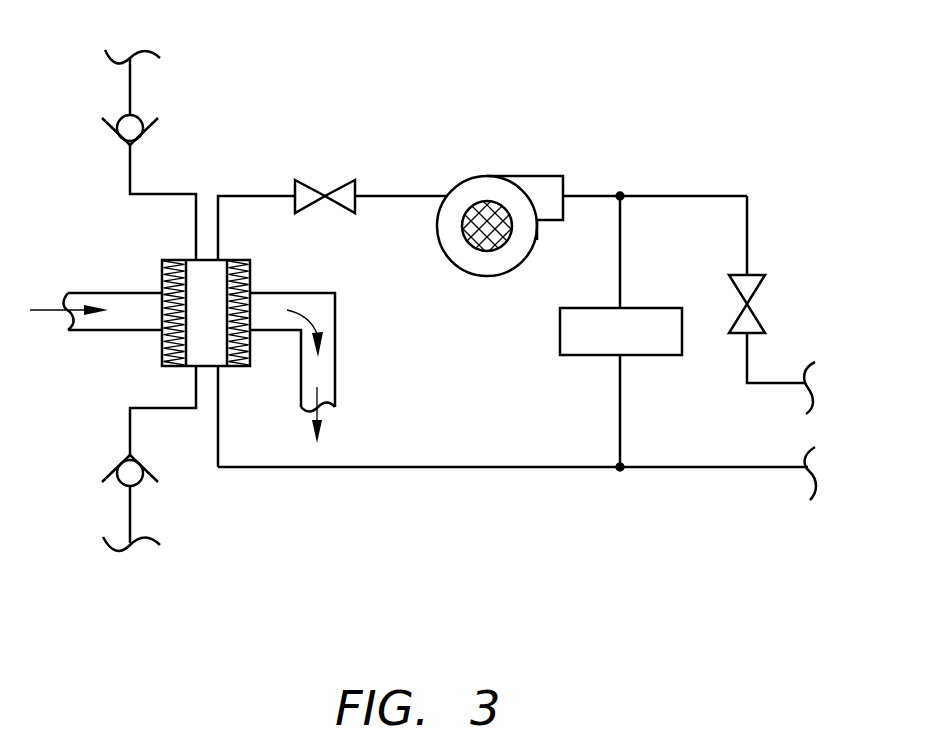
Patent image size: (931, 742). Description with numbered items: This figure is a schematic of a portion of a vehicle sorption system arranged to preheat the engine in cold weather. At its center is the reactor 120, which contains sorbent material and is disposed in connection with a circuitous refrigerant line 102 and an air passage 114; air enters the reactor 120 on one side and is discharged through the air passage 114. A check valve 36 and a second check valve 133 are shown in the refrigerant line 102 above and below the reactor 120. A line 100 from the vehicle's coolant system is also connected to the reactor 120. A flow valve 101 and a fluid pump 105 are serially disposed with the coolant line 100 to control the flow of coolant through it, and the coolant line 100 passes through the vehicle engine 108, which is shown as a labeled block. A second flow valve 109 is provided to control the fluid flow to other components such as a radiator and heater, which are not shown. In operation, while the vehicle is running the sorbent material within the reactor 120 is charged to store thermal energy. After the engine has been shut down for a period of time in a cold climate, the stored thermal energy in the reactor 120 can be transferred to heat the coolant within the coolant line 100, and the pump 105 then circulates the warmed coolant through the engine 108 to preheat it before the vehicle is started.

The check valve 36 is at (137, 117).
The circuitous refrigerant line 102 is at (195, 239).
The reactor 120 is at (162, 355).
The check valve 133 is at (124, 478).
The air passage 114 is at (308, 368).
The flow valve 101 is at (305, 182).
The fluid pump 105 is at (502, 174).
The vehicle engine 108 is at (597, 357).
The second flow valve 109 is at (760, 273).
The coolant line 100 is at (365, 468).